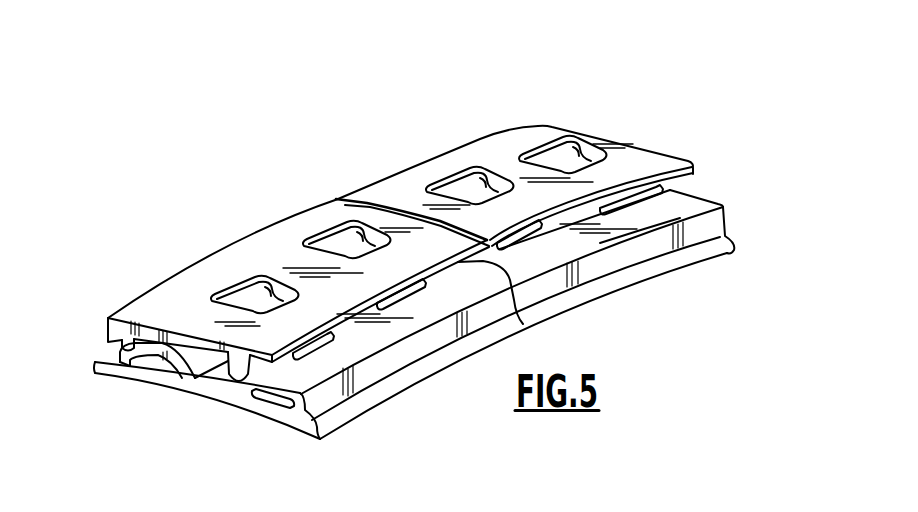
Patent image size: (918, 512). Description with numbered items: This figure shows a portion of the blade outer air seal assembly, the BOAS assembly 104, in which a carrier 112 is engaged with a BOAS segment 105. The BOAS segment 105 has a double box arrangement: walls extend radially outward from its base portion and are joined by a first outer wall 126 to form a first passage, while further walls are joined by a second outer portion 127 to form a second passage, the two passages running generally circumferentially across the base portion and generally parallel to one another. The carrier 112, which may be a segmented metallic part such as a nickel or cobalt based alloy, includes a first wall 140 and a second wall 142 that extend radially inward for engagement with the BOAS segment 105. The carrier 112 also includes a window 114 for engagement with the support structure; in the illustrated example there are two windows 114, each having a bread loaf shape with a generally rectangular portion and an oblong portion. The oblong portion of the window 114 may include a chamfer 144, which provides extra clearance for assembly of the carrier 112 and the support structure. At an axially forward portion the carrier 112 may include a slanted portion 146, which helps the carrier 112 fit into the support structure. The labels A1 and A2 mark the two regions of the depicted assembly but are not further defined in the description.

The BOAS assembly 104 is at (681, 75).
The BOAS segment 105 is at (367, 401).
The carrier 112 is at (225, 263).
The window 114 is at (320, 238).
The chamfer 144 is at (343, 222).
The slanted portion 146 is at (133, 338).
The first wall 140 is at (108, 328).
The second wall 142 is at (241, 388).
The first outer wall 126 is at (156, 356).
The second outer portion 127 is at (277, 400).
The first rail portion A1 is at (104, 364).
The second rail portion A2 is at (620, 278).